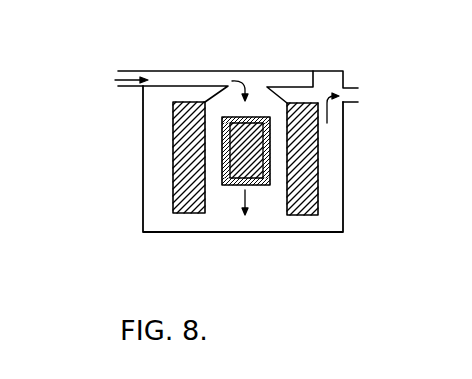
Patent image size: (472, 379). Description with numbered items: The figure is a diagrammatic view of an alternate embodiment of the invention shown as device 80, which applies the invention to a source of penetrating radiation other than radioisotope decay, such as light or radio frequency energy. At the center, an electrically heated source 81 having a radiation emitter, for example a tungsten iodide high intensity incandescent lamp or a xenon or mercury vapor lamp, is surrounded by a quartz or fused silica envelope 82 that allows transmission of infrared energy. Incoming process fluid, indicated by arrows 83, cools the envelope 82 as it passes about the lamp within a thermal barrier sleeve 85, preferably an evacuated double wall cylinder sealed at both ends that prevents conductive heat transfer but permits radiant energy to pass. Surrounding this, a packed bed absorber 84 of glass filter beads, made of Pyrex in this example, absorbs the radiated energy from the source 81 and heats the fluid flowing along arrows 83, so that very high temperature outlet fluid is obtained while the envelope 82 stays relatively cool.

The device 80 is at (110, 155).
The electrically heated source 81 is at (233, 185).
The quartz or fused silica envelope 82 is at (253, 185).
The arrows indicating incoming process fluid 83 is at (170, 80).
The packed bed absorber 84 is at (327, 138).
The thermal barrier sleeve 85 is at (302, 195).